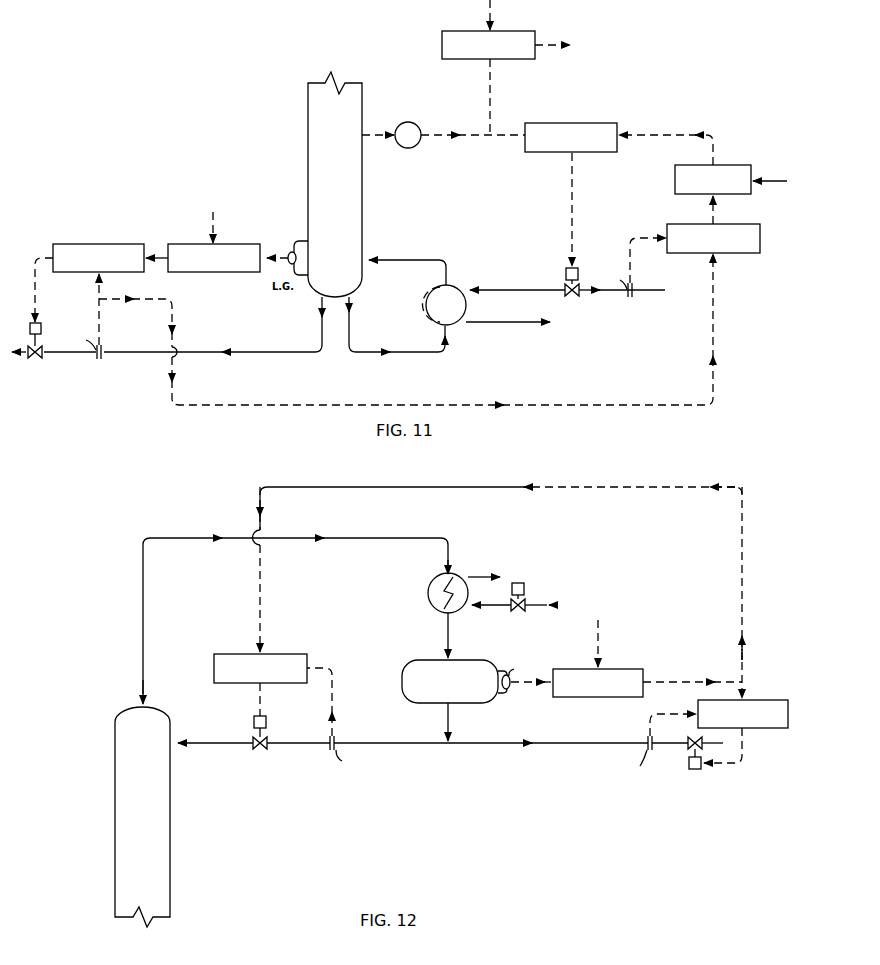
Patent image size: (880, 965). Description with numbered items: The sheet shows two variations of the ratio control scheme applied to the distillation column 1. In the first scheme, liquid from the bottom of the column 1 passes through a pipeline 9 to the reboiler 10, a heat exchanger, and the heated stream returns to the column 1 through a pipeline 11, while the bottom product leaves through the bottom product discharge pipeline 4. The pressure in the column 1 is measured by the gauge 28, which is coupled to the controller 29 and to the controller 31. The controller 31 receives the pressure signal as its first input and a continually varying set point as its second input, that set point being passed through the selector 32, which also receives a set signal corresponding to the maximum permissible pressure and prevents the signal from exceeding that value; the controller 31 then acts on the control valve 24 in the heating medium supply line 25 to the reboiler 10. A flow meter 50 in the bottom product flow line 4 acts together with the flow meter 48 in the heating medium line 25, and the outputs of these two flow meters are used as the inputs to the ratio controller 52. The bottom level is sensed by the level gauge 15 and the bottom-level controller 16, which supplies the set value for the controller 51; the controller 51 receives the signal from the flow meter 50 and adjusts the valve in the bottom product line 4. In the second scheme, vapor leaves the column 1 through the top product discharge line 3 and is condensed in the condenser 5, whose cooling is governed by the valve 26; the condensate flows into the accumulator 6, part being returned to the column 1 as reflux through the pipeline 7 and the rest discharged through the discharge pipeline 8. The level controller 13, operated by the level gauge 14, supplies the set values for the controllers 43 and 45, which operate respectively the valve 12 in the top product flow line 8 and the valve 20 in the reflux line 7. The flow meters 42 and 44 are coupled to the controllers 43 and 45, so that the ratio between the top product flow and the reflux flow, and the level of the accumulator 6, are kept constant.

In FIG. 11, the column 1 is at (341, 198).
In FIG. 12, the column 1 is at (149, 813).
In FIG. 12, the top product column discharge line 3 is at (143, 635).
In FIG. 11, the bottom product discharge pipeline 4 is at (260, 352).
In FIG. 12, the condenser 5 is at (440, 583).
In FIG. 12, the accumulator 6 is at (465, 660).
In FIG. 12, the reflux pipeline 7 is at (202, 743).
In FIG. 12, the discharge pipeline 8 is at (496, 750).
In FIG. 11, the pipeline to reboiler 9 is at (394, 352).
In FIG. 11, the reboiler 10 is at (436, 288).
In FIG. 11, the reboiler return pipeline 11 is at (404, 260).
In FIG. 12, the controllable valve 12 is at (692, 738).
In FIG. 12, the level controller 13 is at (611, 669).
In FIG. 12, the level gauge 14 is at (509, 690).
In FIG. 11, the level gauge 15 is at (289, 252).
In FIG. 11, the bottom-level controller 16 is at (240, 244).
In FIG. 12, the control valve 20 is at (259, 750).
In FIG. 11, the control valve 24 is at (564, 287).
In FIG. 11, the heating medium supply line 25 is at (654, 294).
In FIG. 12, the valve 26 is at (521, 612).
In FIG. 11, the pressure gauge 28 is at (410, 150).
In FIG. 11, the pressure controller 29 is at (522, 31).
In FIG. 11, the controller 31 is at (581, 123).
In FIG. 11, the selector 32 is at (721, 165).
In FIG. 12, the flow meter 42 is at (648, 739).
In FIG. 12, the controller 43 is at (756, 700).
In FIG. 12, the flow meter 44 is at (330, 738).
In FIG. 12, the controller 45 is at (273, 654).
In FIG. 11, the flow meter 48 is at (624, 296).
In FIG. 11, the flow meter 50 is at (103, 360).
In FIG. 11, the controller 51 is at (98, 244).
In FIG. 11, the ratio controller 52 is at (724, 224).